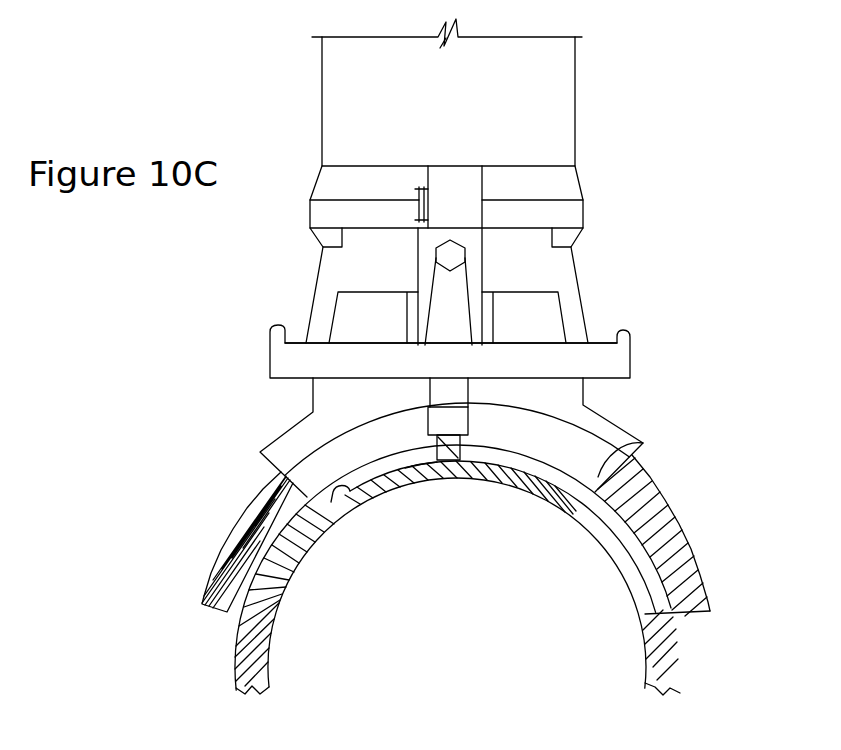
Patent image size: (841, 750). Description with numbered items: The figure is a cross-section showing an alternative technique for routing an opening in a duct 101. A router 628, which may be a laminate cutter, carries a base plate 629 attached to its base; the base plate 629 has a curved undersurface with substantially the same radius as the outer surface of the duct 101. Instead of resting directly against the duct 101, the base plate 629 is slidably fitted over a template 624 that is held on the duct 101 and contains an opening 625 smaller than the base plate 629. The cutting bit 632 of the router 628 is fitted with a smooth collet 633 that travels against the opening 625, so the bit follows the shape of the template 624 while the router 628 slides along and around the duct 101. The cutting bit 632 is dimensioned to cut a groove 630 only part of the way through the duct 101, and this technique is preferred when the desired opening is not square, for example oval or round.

The router 628 is at (577, 168).
The base plate 629 is at (620, 420).
The opening 625 is at (643, 443).
The template 624 is at (700, 570).
The groove 630 is at (355, 508).
The cutting bit 632 is at (420, 460).
The smooth collet 633 is at (467, 422).
The duct 101 is at (682, 672).